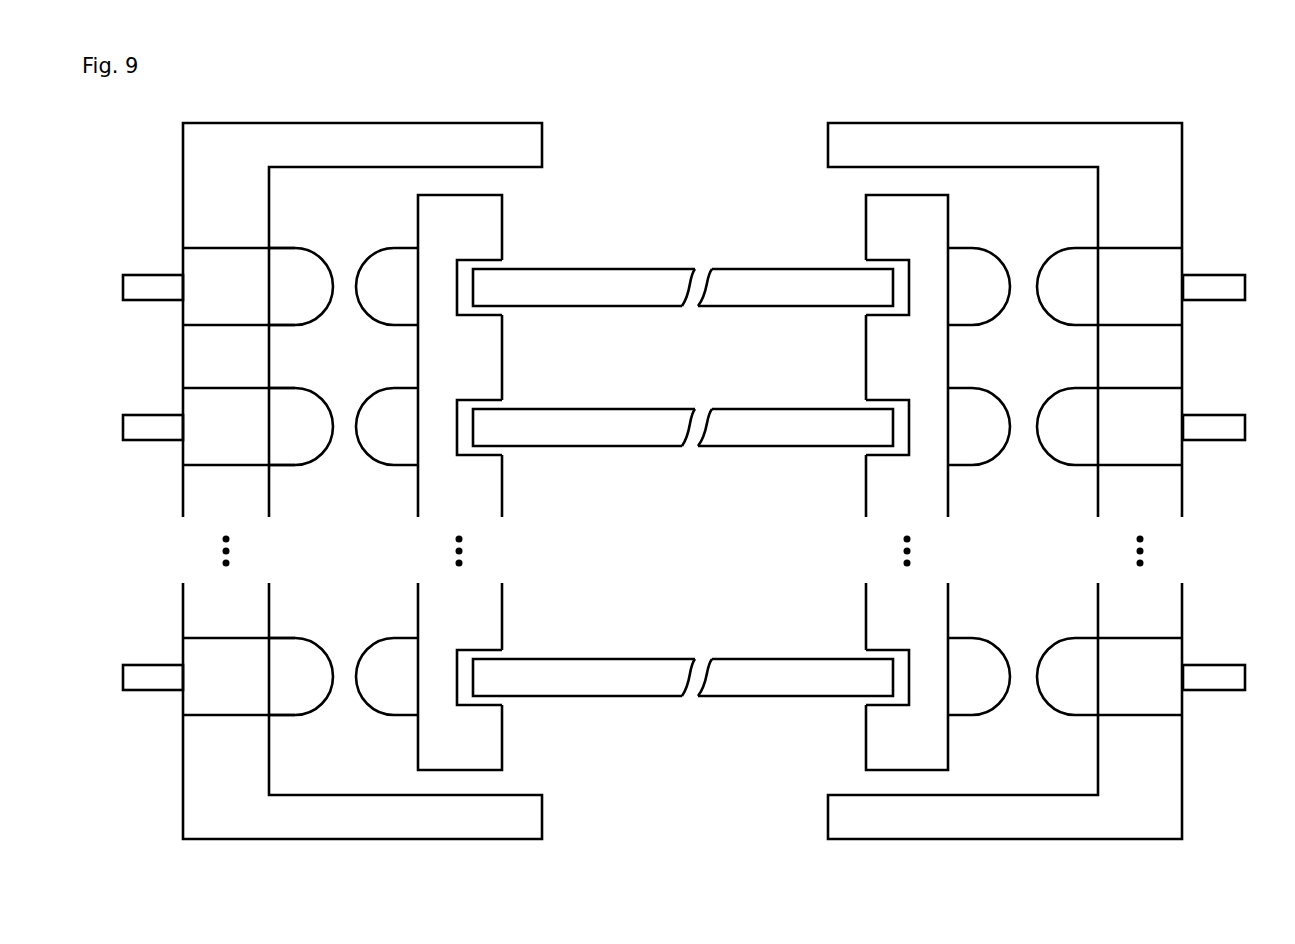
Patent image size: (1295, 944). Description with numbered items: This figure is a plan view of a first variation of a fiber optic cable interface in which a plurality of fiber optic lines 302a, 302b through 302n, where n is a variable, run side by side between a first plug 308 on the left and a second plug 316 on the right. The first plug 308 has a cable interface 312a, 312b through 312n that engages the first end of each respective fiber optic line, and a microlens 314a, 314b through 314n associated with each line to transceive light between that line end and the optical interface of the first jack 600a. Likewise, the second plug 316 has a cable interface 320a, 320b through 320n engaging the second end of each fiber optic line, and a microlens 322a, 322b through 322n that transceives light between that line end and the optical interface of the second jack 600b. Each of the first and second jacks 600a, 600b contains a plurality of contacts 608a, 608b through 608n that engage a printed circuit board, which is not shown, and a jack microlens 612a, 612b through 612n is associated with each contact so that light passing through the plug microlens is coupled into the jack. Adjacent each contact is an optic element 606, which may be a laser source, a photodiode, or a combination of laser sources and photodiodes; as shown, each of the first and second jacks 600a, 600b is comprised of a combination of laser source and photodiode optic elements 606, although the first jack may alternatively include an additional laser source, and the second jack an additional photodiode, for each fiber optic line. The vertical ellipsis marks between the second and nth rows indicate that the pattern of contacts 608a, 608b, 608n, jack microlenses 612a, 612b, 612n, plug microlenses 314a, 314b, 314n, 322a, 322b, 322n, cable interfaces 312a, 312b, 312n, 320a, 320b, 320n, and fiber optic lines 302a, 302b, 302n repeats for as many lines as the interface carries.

The first jack 600a is at (437, 103).
The second jack 600b is at (931, 104).
The first plug 308 is at (585, 163).
The second plug 316 is at (802, 179).
The fiber optic line 302a is at (750, 268).
The fiber optic line 302b is at (750, 408).
The fiber optic line 302n is at (750, 658).
The cable interface 312a is at (537, 240).
The cable interface 312b is at (537, 380).
The cable interface 312n is at (537, 630).
The cable interface 320a is at (856, 264).
The cable interface 320b is at (856, 404).
The cable interface 320n is at (856, 654).
The microlens 314a is at (361, 299).
The microlens 314b is at (361, 439).
The microlens 314n is at (361, 689).
The microlens 322a is at (953, 299).
The microlens 322b is at (953, 439).
The microlens 322n is at (953, 689).
The microlens 612a is at (274, 299).
The microlens 612b is at (274, 439).
The microlens 612n is at (274, 689).
The optic element 606 is at (205, 299).
The contact 608a is at (157, 275).
The contact 608b is at (157, 415).
The contact 608n is at (157, 665).